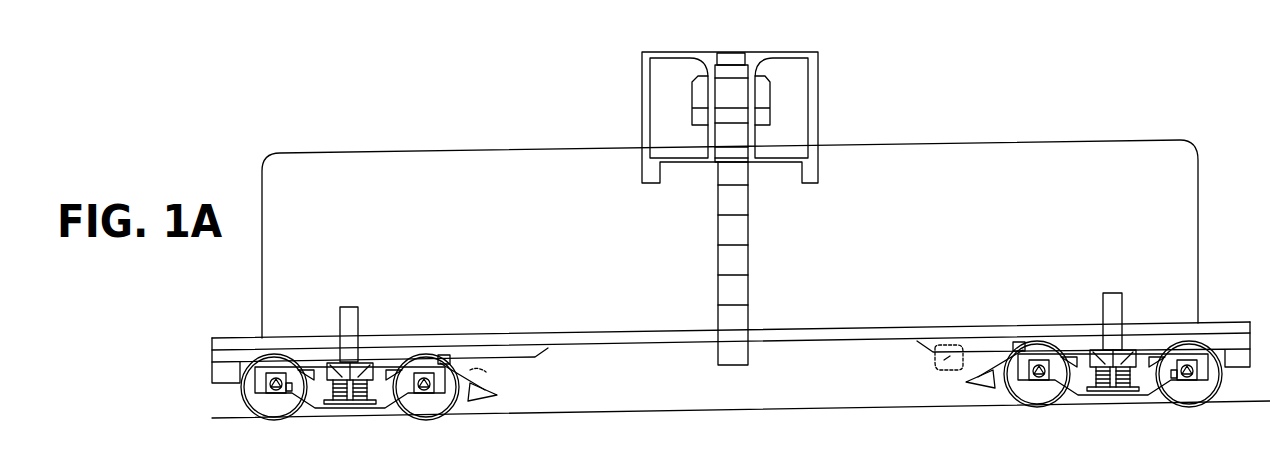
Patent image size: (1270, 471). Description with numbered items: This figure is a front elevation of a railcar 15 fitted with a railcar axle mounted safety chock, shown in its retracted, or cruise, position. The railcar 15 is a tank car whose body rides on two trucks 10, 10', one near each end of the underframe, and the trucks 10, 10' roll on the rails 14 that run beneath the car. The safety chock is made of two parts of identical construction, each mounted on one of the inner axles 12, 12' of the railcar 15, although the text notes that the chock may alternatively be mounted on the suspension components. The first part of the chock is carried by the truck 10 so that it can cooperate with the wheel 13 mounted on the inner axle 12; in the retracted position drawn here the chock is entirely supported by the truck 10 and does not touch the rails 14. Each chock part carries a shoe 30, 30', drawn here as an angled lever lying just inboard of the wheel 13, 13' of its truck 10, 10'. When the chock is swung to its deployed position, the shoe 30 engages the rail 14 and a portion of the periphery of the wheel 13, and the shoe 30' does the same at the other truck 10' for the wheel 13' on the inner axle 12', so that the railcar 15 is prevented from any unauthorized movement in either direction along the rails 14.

The truck 10 is at (369, 373).
The truck 10' is at (1111, 356).
The inner axle 12 is at (385, 412).
The inner axle 12' is at (1050, 407).
The wheel 13 is at (419, 410).
The wheel 13' is at (1062, 398).
The rails 14 is at (1248, 402).
The railcar 15 is at (1153, 173).
The shoe 30 is at (467, 411).
The shoe 30' is at (995, 398).